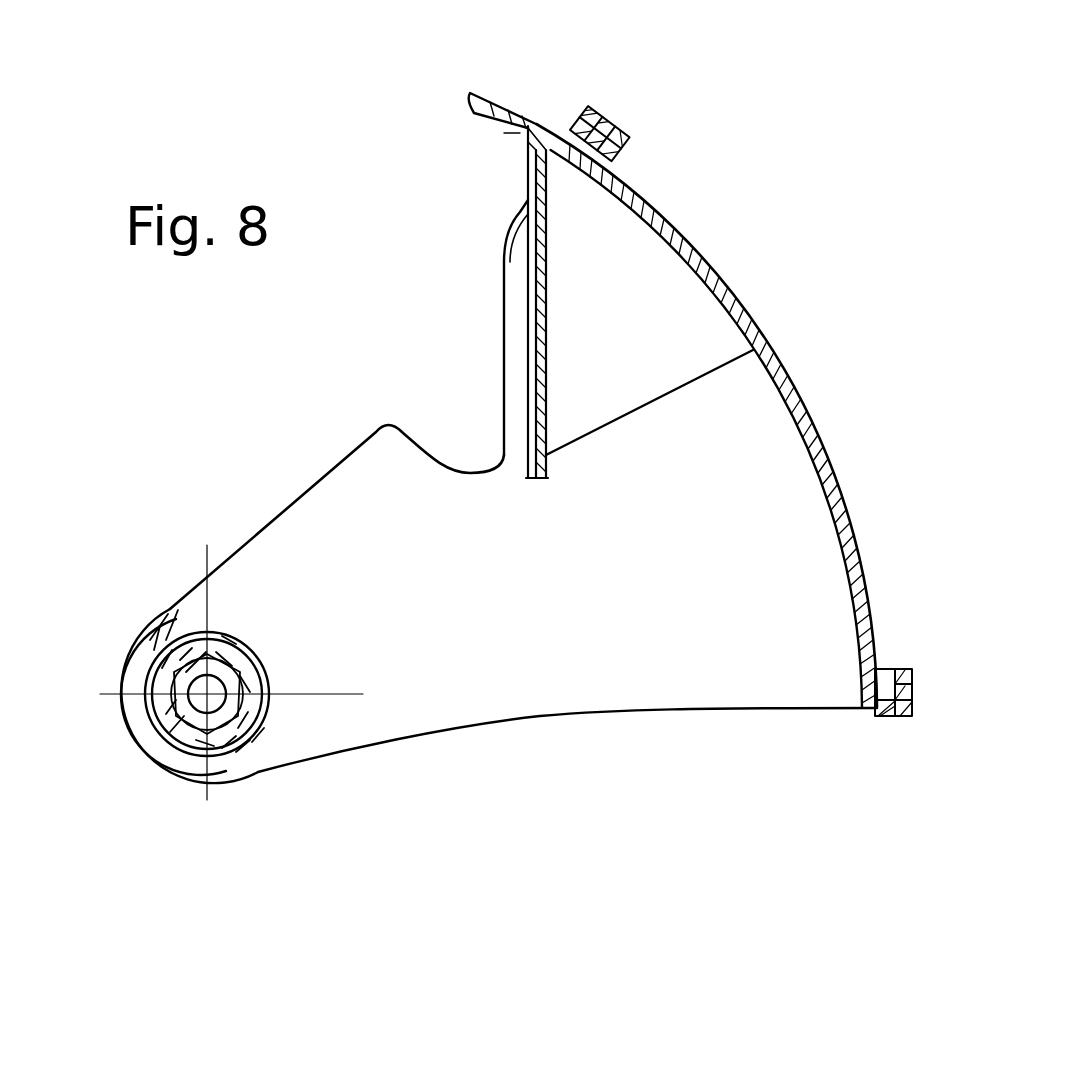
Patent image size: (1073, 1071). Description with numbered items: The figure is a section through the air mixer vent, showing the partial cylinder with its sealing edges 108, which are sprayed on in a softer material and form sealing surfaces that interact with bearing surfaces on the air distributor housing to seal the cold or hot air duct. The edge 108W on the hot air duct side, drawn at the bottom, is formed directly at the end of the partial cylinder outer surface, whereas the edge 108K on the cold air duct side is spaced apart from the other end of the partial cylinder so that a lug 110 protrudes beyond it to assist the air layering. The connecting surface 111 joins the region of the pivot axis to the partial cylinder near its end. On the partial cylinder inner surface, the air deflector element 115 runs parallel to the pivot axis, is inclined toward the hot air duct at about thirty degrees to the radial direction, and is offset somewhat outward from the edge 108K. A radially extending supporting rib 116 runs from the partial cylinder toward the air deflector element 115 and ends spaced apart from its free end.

The edge 108 is at (799, 377).
The edge on the cold air duct side 108K is at (587, 112).
The edge on the hot air duct side 108W is at (905, 669).
The lug 110 is at (490, 120).
The connecting surface 111 is at (513, 693).
The air deflector element 115 is at (540, 337).
The supporting rib 116 is at (645, 328).